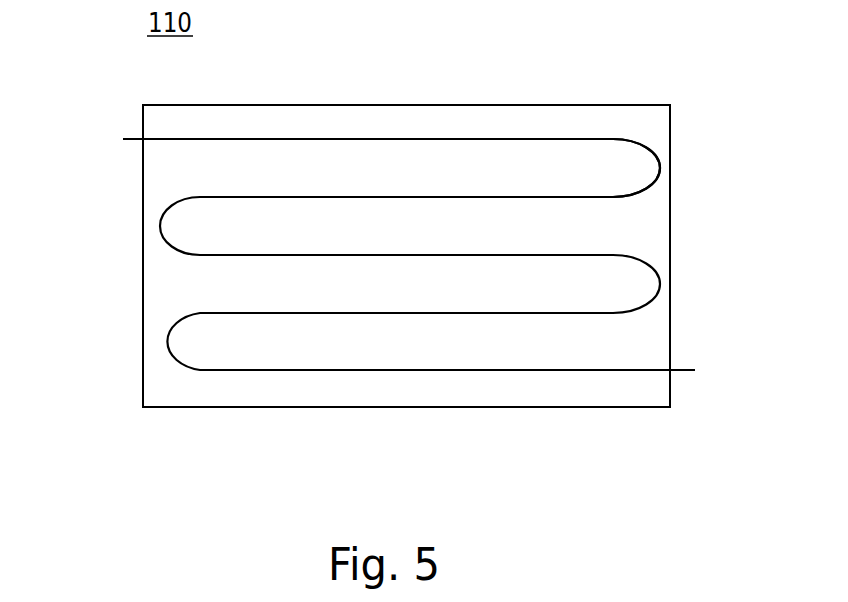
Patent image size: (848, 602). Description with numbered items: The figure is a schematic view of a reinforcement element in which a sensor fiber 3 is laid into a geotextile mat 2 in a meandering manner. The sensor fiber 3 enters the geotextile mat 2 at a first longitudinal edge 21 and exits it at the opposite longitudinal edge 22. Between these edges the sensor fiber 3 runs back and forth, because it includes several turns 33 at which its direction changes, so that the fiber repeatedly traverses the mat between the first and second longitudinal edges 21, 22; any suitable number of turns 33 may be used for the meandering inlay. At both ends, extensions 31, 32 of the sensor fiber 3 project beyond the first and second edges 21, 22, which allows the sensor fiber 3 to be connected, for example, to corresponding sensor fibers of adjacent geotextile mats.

The geotextile mat 2 is at (613, 105).
The sensor fiber 3 is at (355, 137).
The extension of the sensor fiber 31 is at (123, 139).
The extension of the sensor fiber 32 is at (695, 370).
The turn 33 is at (659, 168).
The first longitudinal edge 21 is at (126, 302).
The opposite longitudinal edge 22 is at (686, 214).